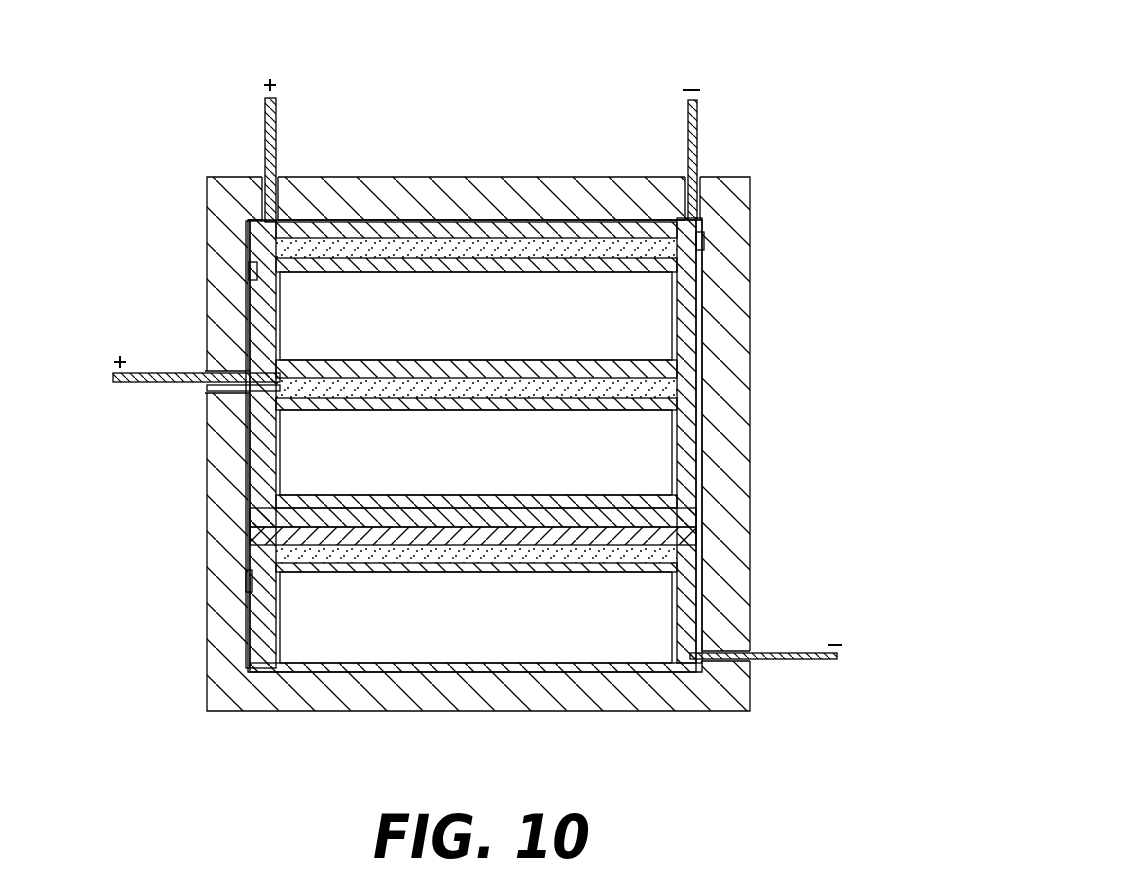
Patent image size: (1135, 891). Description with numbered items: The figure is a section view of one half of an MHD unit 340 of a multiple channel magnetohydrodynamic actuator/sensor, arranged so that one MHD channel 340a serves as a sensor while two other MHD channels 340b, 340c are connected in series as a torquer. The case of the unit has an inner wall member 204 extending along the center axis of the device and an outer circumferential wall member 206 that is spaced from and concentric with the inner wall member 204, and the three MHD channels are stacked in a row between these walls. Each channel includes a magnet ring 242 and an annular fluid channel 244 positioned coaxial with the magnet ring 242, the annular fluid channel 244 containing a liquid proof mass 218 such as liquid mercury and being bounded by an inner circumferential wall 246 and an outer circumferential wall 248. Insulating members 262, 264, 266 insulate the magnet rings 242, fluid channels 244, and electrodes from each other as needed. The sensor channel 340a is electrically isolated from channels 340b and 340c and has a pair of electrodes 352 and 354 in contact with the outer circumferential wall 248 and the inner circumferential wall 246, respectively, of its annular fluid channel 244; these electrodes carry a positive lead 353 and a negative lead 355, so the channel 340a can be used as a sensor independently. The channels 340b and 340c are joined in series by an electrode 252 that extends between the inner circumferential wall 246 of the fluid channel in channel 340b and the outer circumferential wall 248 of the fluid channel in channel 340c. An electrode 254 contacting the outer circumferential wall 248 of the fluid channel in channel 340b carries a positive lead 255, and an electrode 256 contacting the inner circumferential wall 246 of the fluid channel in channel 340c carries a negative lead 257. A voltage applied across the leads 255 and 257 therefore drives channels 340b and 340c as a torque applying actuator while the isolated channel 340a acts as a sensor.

The MHD unit 340 is at (489, 393).
The MHD channel 340a is at (792, 265).
The MHD channel 340b is at (772, 375).
The MHD channel 340c is at (772, 590).
The inner wall member 204 is at (727, 240).
The outer circumferential wall member 206 is at (232, 318).
The liquid proof mass 218 is at (366, 228).
The magnet ring 242 is at (655, 322).
The annular fluid channel 244 is at (255, 247).
The inner circumferential wall 246 is at (657, 228).
The outer circumferential wall 248 is at (291, 248).
The electrode 252 is at (257, 587).
The electrode 254 is at (235, 387).
The positive lead 255 is at (135, 382).
The electrode 256 is at (700, 540).
The negative lead 257 is at (835, 664).
The insulating member 262 is at (257, 317).
The insulating member 264 is at (488, 230).
The insulating member 266 is at (573, 660).
The electrode 352 is at (252, 273).
The positive lead 353 is at (265, 122).
The electrode 354 is at (703, 240).
The negative lead 355 is at (697, 140).